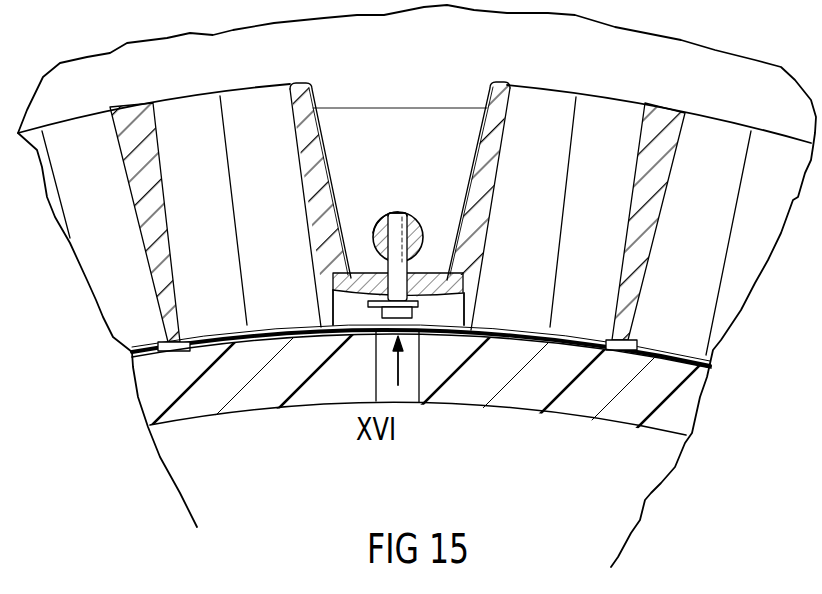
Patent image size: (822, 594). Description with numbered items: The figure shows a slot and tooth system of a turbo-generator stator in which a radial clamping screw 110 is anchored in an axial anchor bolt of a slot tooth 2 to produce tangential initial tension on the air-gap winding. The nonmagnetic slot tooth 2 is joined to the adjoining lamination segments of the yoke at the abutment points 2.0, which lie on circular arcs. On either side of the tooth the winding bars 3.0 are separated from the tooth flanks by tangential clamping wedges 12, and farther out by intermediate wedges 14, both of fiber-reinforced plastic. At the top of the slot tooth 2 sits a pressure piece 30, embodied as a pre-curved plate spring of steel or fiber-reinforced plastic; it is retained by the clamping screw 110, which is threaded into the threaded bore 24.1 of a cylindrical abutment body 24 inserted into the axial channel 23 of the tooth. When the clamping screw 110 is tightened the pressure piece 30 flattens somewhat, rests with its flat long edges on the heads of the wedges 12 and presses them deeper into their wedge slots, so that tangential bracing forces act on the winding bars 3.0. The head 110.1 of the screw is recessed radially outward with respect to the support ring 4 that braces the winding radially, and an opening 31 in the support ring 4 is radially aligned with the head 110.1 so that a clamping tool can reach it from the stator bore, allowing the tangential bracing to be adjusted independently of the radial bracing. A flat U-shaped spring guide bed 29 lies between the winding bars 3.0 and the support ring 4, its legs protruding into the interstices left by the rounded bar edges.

The slot tooth 2 is at (392, 151).
The abutment point 2.0 is at (413, 108).
The winding bar 3.0 is at (598, 113).
The support ring 4 is at (587, 390).
The clamping wedge 12 is at (312, 152).
The intermediate wedge 14 is at (133, 120).
The axial channel 23 is at (404, 213).
The abutment body 24 is at (422, 229).
The threaded bore 24.1 is at (374, 234).
The spring guide bed 29 is at (187, 352).
The pressure piece 30 is at (461, 299).
The opening 31 is at (407, 399).
The clamping screw 110 is at (398, 281).
The head of clamping screw 110.1 is at (411, 318).